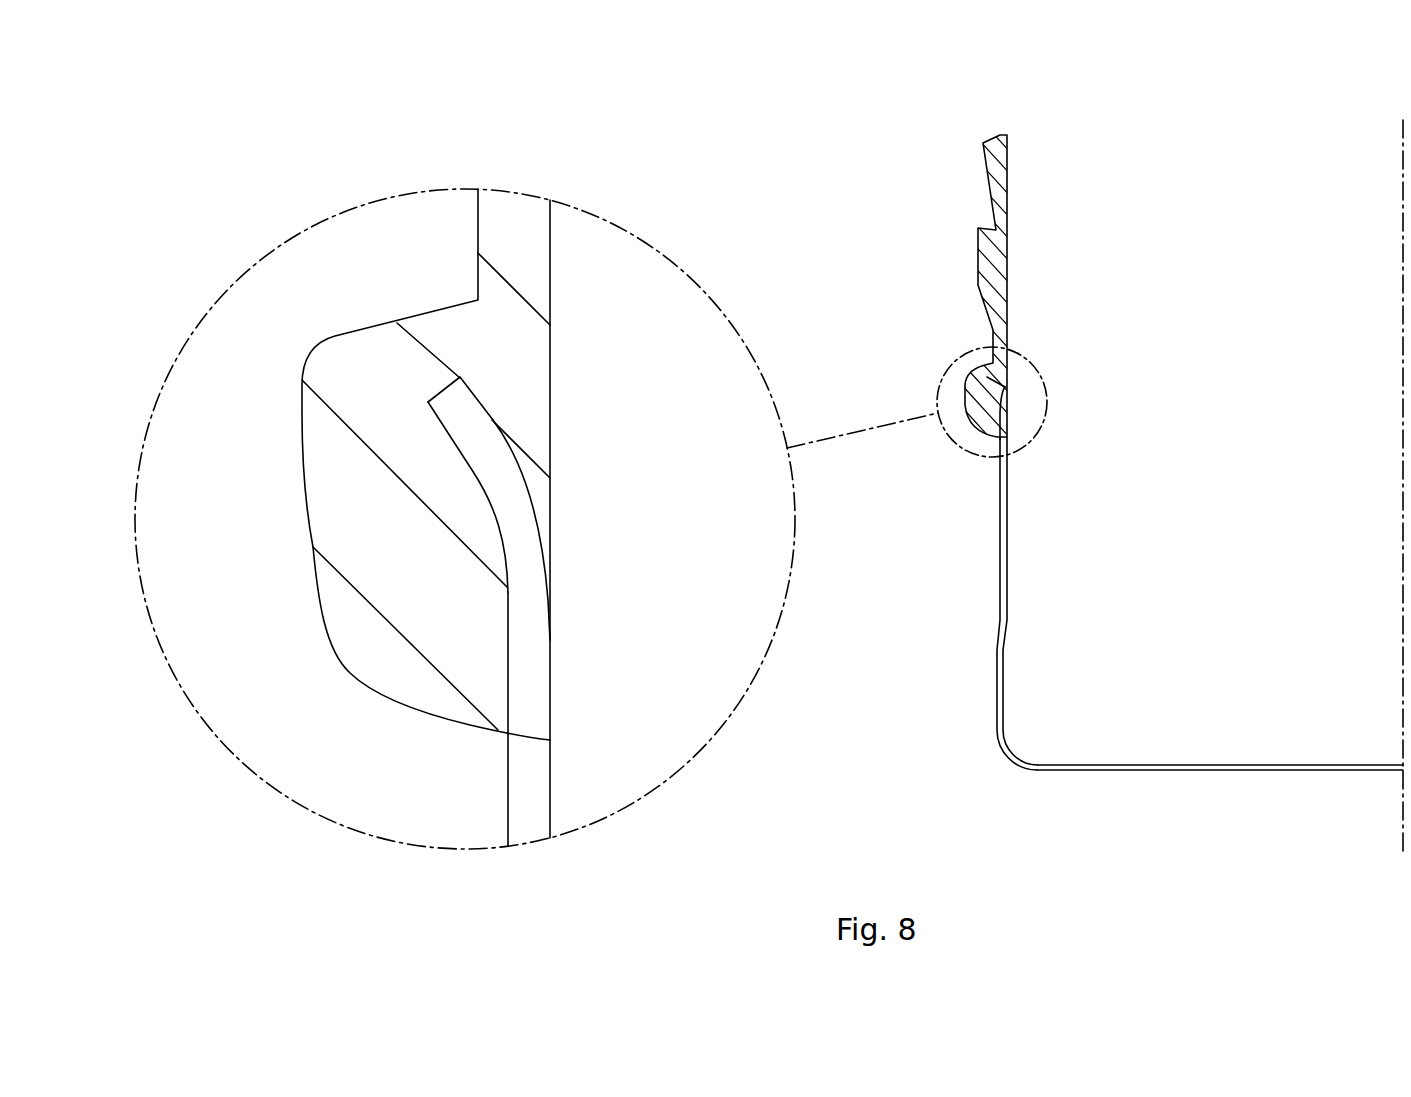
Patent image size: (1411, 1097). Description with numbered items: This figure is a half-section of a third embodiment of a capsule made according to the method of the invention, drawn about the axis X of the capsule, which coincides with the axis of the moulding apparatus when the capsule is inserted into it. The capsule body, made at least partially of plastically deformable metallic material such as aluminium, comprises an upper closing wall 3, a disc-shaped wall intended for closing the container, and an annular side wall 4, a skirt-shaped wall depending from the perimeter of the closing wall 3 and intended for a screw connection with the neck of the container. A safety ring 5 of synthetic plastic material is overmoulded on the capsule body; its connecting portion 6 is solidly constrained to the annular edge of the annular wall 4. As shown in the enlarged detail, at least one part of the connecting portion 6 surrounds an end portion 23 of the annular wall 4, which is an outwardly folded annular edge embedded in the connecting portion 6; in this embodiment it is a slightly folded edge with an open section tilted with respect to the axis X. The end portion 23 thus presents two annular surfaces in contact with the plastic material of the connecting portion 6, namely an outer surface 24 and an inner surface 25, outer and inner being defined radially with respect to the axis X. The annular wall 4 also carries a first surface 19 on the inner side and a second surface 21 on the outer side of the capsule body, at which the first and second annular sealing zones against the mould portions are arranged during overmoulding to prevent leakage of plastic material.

The upper closing wall 3 is at (1257, 767).
The annular side wall 4 is at (1005, 582).
The safety ring 5 is at (998, 250).
The connecting portion 6 is at (365, 350).
The first surface 19 is at (550, 755).
The second surface 21 is at (508, 755).
The end portion 23 is at (465, 414).
The outer surface 24 is at (473, 473).
The inner surface 25 is at (527, 487).
The axis X is at (1403, 168).